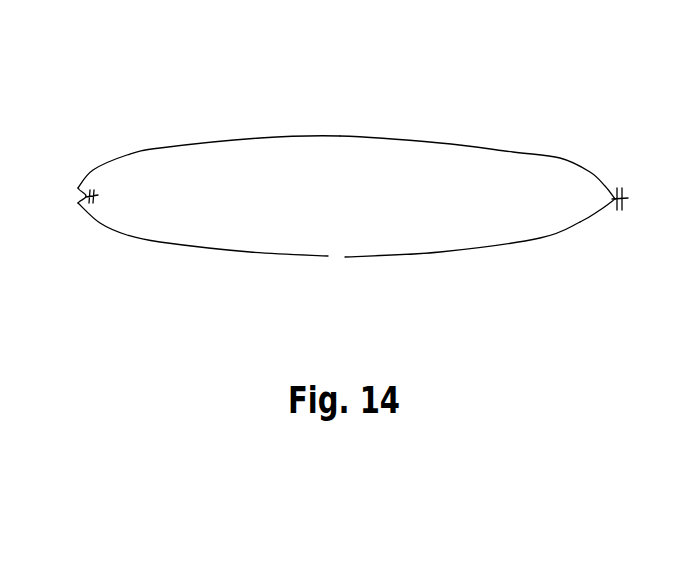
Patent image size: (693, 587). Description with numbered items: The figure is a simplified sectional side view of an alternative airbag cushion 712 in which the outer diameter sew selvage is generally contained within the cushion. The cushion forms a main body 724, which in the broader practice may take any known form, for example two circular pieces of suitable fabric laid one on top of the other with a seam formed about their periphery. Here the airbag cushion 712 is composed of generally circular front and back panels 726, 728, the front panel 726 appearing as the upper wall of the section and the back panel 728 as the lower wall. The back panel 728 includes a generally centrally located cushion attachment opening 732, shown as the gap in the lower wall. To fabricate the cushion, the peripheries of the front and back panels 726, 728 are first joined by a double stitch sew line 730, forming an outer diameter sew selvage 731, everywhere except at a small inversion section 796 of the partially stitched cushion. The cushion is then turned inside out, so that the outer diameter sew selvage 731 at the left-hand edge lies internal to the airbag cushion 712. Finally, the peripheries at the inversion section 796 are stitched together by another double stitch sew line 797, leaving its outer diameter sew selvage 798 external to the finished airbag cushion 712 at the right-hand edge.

The airbag cushion 712 is at (380, 174).
The main body 724 is at (486, 141).
The front panel 726 is at (158, 143).
The back panel 728 is at (486, 257).
The double stitch sew line 730 is at (99, 213).
The outer diameter sew selvage 731 is at (106, 199).
The cushion attachment opening 732 is at (351, 263).
The inversion section 796 is at (603, 223).
The double stitch sew line 797 is at (620, 185).
The outer diameter sew selvage 798 is at (633, 209).